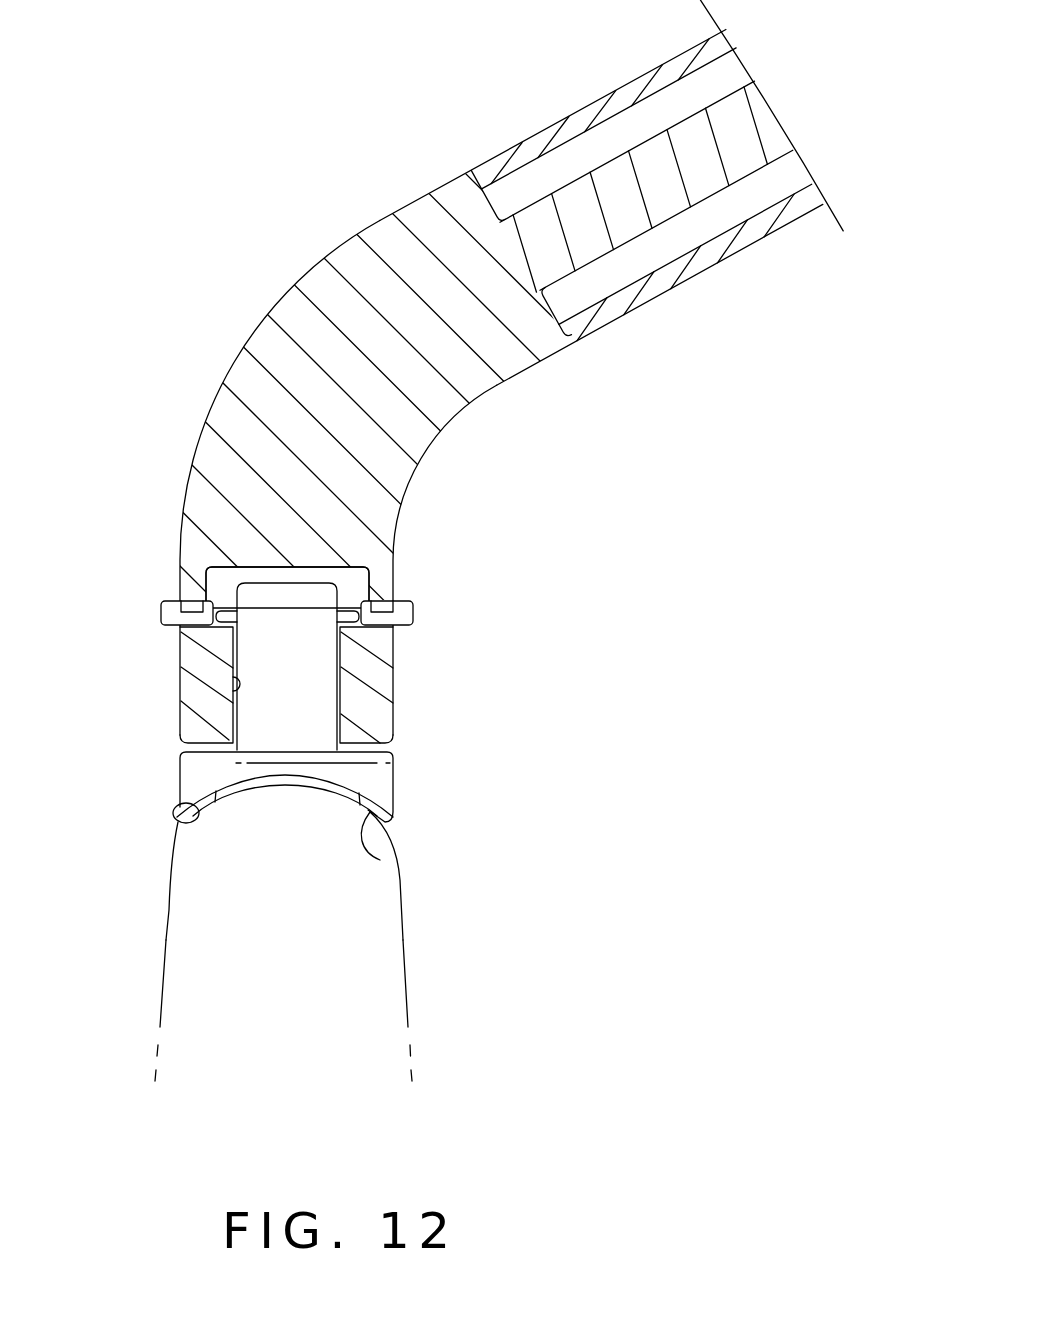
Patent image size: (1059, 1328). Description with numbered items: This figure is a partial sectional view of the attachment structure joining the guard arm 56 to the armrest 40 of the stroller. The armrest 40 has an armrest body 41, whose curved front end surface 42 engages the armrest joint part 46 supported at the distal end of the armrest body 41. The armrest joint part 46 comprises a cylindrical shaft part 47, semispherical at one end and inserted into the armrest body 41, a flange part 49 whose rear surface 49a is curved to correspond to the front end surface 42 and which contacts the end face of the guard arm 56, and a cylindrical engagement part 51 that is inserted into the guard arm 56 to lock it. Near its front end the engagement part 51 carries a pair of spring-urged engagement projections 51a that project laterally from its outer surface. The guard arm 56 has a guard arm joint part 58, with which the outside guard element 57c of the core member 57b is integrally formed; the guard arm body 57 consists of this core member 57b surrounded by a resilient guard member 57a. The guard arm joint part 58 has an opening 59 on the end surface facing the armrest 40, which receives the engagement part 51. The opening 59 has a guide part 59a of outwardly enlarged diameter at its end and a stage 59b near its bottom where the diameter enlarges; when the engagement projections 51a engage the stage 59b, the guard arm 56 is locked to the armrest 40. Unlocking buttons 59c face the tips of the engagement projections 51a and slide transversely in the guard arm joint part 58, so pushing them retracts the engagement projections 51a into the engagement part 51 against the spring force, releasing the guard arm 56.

The armrest 40 is at (341, 916).
The armrest body 41 is at (407, 995).
The front end surface 42 is at (178, 815).
The armrest joint part 46 is at (308, 802).
The shaft part 47 is at (280, 776).
The flange part 49 is at (188, 783).
The rear surface 49a is at (380, 860).
The engagement part 51 is at (295, 607).
The engagement projections 51a is at (227, 613).
The guard arm 56 is at (471, 543).
The guard arm body 57 is at (610, 192).
The guard member 57a is at (533, 128).
The core member 57b is at (643, 158).
The guard element 57c is at (686, 104).
The guard arm joint part 58 is at (463, 413).
The opening 59 is at (295, 643).
The guide part 59a is at (185, 758).
The stage 59b is at (227, 628).
The unlocking buttons 59c is at (162, 601).